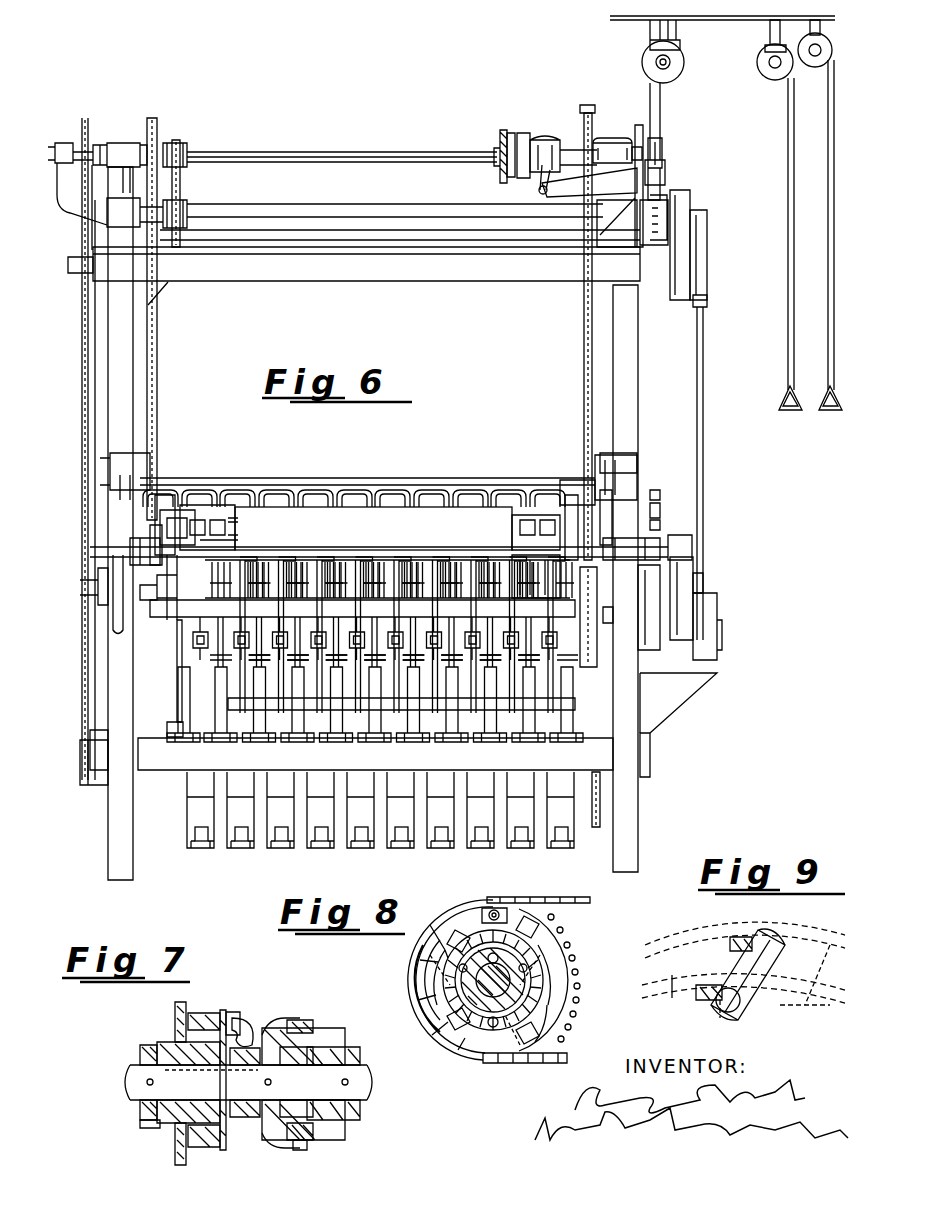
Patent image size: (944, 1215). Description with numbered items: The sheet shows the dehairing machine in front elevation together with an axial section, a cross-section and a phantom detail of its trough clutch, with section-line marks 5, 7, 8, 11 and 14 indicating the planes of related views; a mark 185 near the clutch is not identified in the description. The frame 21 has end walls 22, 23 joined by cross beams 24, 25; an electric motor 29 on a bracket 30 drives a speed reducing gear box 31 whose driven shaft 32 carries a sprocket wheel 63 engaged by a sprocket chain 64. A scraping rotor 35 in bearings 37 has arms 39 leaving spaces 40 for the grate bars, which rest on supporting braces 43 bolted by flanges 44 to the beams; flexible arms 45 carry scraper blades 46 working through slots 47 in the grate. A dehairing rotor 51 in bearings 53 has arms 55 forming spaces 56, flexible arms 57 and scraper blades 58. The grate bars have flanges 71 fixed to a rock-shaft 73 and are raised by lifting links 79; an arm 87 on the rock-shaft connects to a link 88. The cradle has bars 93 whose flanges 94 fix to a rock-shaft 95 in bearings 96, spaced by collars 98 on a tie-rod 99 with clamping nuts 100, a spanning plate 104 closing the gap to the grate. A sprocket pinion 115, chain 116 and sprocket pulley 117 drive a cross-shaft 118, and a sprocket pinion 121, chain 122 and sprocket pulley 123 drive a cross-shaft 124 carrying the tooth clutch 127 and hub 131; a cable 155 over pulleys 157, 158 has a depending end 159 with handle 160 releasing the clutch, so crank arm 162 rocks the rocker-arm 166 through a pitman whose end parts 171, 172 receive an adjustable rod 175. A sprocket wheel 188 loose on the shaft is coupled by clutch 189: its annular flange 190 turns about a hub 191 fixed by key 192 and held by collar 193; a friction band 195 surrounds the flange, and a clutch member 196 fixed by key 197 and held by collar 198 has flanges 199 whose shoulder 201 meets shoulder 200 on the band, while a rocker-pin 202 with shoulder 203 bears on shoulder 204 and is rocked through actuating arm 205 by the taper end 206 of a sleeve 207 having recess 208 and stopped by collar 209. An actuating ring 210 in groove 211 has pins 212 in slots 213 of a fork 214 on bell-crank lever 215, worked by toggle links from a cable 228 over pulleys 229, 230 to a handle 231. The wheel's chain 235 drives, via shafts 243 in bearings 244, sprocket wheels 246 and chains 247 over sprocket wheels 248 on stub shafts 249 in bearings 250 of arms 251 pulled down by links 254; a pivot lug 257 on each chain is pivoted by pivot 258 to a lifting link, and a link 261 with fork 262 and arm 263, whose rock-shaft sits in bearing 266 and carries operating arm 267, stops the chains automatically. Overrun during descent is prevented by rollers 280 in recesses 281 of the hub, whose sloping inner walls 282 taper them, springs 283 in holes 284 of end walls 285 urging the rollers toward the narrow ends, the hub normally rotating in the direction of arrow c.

In FIG. 6, the section line 5 is at (560, 102).
In FIG. 8, the line 7— 7 is at (495, 882).
In FIG. 7, the line 8— 8 is at (180, 985).
In FIG. 6, the section line 11 is at (482, 180).
In FIG. 6, the section line 14 is at (578, 428).
In FIG. 6, the frame 21 is at (118, 140).
In FIG. 6, the end wall 22 is at (108, 385).
In FIG. 6, the end wall 23 is at (613, 373).
In FIG. 6, the cross beam 24 is at (486, 268).
In FIG. 6, the cross beam 25 is at (172, 770).
In FIG. 6, the electric motor 29 is at (700, 625).
In FIG. 6, the bracket 30 is at (675, 715).
In FIG. 6, the speed reducing gear box 31 is at (648, 600).
In FIG. 6, the driven shaft 32 is at (605, 608).
In FIG. 6, the scraping rotor 35 is at (292, 848).
In FIG. 6, the bearings 37 is at (648, 770).
In FIG. 6, the arms 39 is at (198, 790).
In FIG. 6, the spaces 40 is at (222, 838).
In FIG. 6, the supporting braces 43 is at (182, 725).
In FIG. 6, the flanges 44 is at (170, 735).
In FIG. 6, the flexible arms 45 is at (195, 820).
In FIG. 6, the scraper blades 46 is at (192, 843).
In FIG. 6, the openings or slots 47 is at (365, 495).
In FIG. 6, the dehairing rotor 51 is at (230, 507).
In FIG. 6, the bearings 53 is at (98, 590).
In FIG. 6, the arms 55 is at (540, 572).
In FIG. 6, the spaces 56 is at (238, 521).
In FIG. 6, the flexible arms 57 is at (238, 538).
In FIG. 6, the scraper blades 58 is at (530, 525).
In FIG. 6, the sprocket wheel 63 is at (608, 623).
In FIG. 6, the sprocket chain 64 is at (583, 792).
In FIG. 6, the flanges 71 is at (210, 497).
In FIG. 6, the rock-shaft 73 is at (335, 485).
In FIG. 6, the lifting links 79 is at (580, 590).
In FIG. 6, the arm 87 is at (150, 530).
In FIG. 6, the link 88 is at (160, 540).
In FIG. 6, the bars 93 is at (370, 712).
In FIG. 6, the flanges 94 is at (290, 560).
In FIG. 6, the rock-shaft 95 is at (692, 550).
In FIG. 6, the bearings 96 is at (95, 549).
In FIG. 6, the collars 98 is at (305, 712).
In FIG. 6, the tie-rod 99 is at (515, 722).
In FIG. 6, the clamping nuts 100 is at (240, 715).
In FIG. 6, the spanning plate 104 is at (440, 507).
In FIG. 6, the sprocket pinion 115 is at (85, 778).
In FIG. 6, the sprocket chain 116 is at (86, 688).
In FIG. 6, the sprocket pulley 117 is at (86, 120).
In FIG. 6, the cross-shaft 118 is at (360, 152).
In FIG. 7, the cross-shaft 118 is at (368, 1085).
In FIG. 6, the sprocket pinion 121 is at (181, 148).
In FIG. 6, the sprocket chain 122 is at (180, 190).
In FIG. 6, the sprocket pulley 123 is at (182, 212).
In FIG. 6, the cross-shaft 124 is at (395, 200).
In FIG. 6, the tooth clutch 127 is at (667, 178).
In FIG. 6, the hub 131 is at (683, 188).
In FIG. 6, the flexible connection 155 is at (662, 100).
In FIG. 6, the pulley 157 is at (683, 70).
In FIG. 6, the pulley 158 is at (770, 75).
In FIG. 6, the depending end 159 is at (788, 248).
In FIG. 6, the operating handle 160 is at (785, 410).
In FIG. 6, the crank arm 162 is at (692, 238).
In FIG. 6, the rocker-arm 166 is at (685, 595).
In FIG. 6, the end part 171 is at (700, 298).
In FIG. 6, the end part 172 is at (703, 580).
In FIG. 6, the rod 175 is at (703, 365).
In FIG. 6, the gear segment 185 is at (650, 232).
In FIG. 6, the sprocket wheel 188 is at (501, 130).
In FIG. 7, the sprocket wheel 188 is at (175, 1148).
In FIG. 8, the sprocket wheel 188 is at (438, 970).
In FIG. 6, the clutch 189 is at (495, 145).
In FIG. 7, the clutch 189 is at (246, 1000).
In FIG. 7, the annular flange 190 is at (240, 1125).
In FIG. 8, the annular flange 190 is at (548, 1012).
In FIG. 9, the annular flange 190 is at (805, 938).
In FIG. 7, the hub 191 is at (195, 1112).
In FIG. 8, the hub 191 is at (545, 970).
In FIG. 9, the hub 191 is at (743, 982).
In FIG. 7, the key 192 is at (195, 1072).
In FIG. 7, the collar 193 is at (150, 1058).
In FIG. 7, the friction band 195 is at (172, 1128).
In FIG. 8, the friction band 195 is at (527, 992).
In FIG. 7, the clutch member 196 is at (224, 1010).
In FIG. 8, the clutch member 196 is at (493, 980).
In FIG. 7, the key 197 is at (265, 1090).
In FIG. 7, the collar 198 is at (310, 1090).
In FIG. 8, the circumferentially extending flanges 199 is at (548, 1040).
In FIG. 8, the shoulder 200 is at (425, 938).
In FIG. 8, the shoulder 201 is at (440, 950).
In FIG. 7, the rocker-pin 202 is at (198, 1020).
In FIG. 8, the rocker-pin 202 is at (507, 916).
In FIG. 8, the shoulder 203 is at (497, 908).
In FIG. 8, the shoulder 204 is at (480, 915).
In FIG. 7, the actuating arm 205 is at (255, 1028).
In FIG. 7, the taper end 206 is at (280, 1030).
In FIG. 6, the endwise movable sleeve 207 is at (544, 166).
In FIG. 7, the endwise movable sleeve 207 is at (320, 1045).
In FIG. 7, the inner annular recess 208 is at (355, 1056).
In FIG. 7, the collar 209 is at (355, 1108).
In FIG. 7, the actuating ring 210 is at (313, 1132).
In FIG. 7, the annular groove 211 is at (285, 1140).
In FIG. 7, the radially extending pins 212 is at (300, 1146).
In FIG. 7, the slots 213 is at (307, 1147).
In FIG. 7, the fork 214 is at (313, 1028).
In FIG. 6, the bell-crank lever 215 is at (562, 197).
In FIG. 6, the flexible connection 228 is at (830, 150).
In FIG. 6, the pulley 229 is at (652, 58).
In FIG. 6, the pulley 230 is at (812, 66).
In FIG. 6, the handle 231 is at (828, 408).
In FIG. 8, the sprocket chain 235 is at (422, 1012).
In FIG. 6, the shafts 243 is at (76, 202).
In FIG. 6, the bearings 244 is at (64, 143).
In FIG. 6, the sprocket wheels 246 is at (157, 130).
In FIG. 6, the sprocket chains 247 is at (157, 340).
In FIG. 6, the sprocket wheels 248 is at (148, 460).
In FIG. 6, the stub shafts 249 is at (140, 472).
In FIG. 6, the bearings 250 is at (130, 482).
In FIG. 6, the arms 251 is at (115, 484).
In FIG. 6, the link 254 is at (625, 470).
In FIG. 6, the pivot lug 257 is at (580, 110).
In FIG. 6, the pivot 258 is at (595, 140).
In FIG. 6, the link 261 is at (666, 437).
In FIG. 6, the fork 262 is at (652, 510).
In FIG. 6, the arm 263 is at (652, 526).
In FIG. 6, the bearing 266 is at (652, 494).
In FIG. 6, the operating arm 267 is at (560, 490).
In FIG. 8, the rollers 280 is at (495, 1028).
In FIG. 9, the rollers 280 is at (730, 1012).
In FIG. 8, the recesses 281 is at (465, 1035).
In FIG. 9, the recesses 281 is at (785, 940).
In FIG. 8, the inner walls 282 is at (543, 945).
In FIG. 9, the inner walls 282 is at (760, 1010).
In FIG. 9, the springs 283 is at (730, 944).
In FIG. 9, the holes 284 is at (735, 937).
In FIG. 9, the end walls 285 is at (762, 930).
In FIG. 8, the arrow c is at (407, 1017).